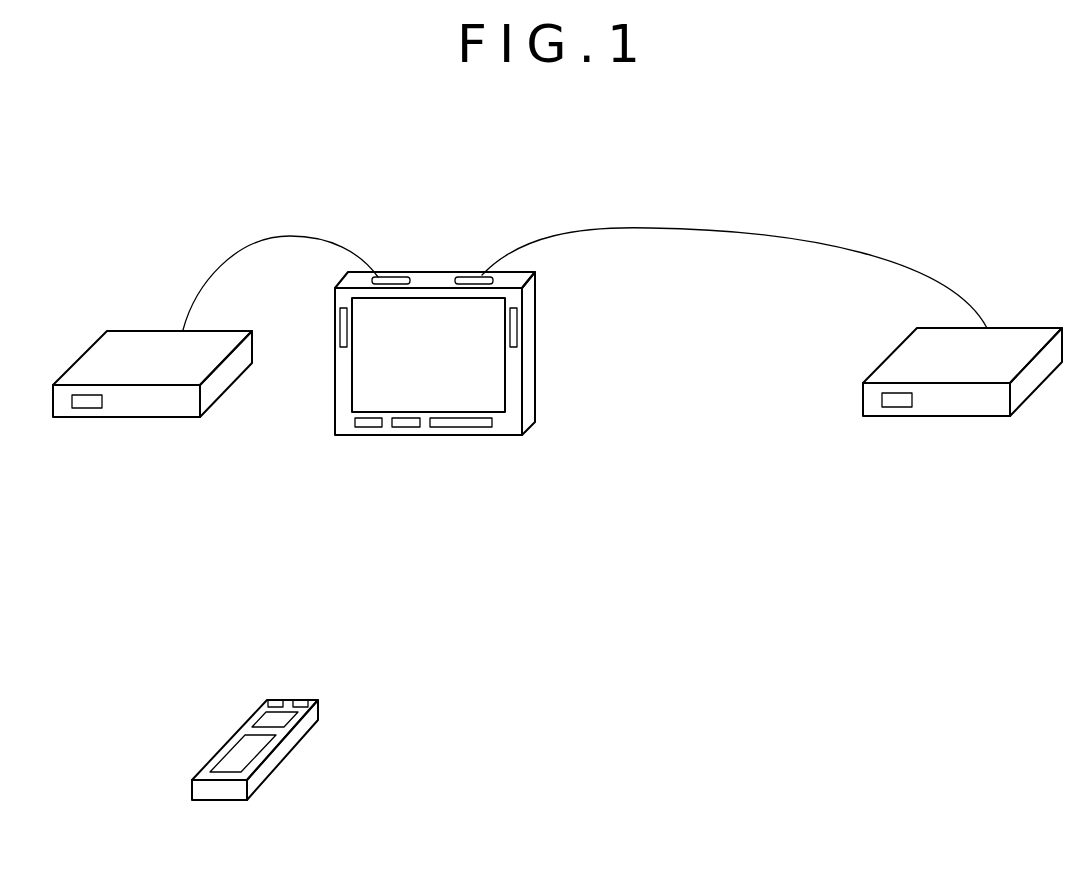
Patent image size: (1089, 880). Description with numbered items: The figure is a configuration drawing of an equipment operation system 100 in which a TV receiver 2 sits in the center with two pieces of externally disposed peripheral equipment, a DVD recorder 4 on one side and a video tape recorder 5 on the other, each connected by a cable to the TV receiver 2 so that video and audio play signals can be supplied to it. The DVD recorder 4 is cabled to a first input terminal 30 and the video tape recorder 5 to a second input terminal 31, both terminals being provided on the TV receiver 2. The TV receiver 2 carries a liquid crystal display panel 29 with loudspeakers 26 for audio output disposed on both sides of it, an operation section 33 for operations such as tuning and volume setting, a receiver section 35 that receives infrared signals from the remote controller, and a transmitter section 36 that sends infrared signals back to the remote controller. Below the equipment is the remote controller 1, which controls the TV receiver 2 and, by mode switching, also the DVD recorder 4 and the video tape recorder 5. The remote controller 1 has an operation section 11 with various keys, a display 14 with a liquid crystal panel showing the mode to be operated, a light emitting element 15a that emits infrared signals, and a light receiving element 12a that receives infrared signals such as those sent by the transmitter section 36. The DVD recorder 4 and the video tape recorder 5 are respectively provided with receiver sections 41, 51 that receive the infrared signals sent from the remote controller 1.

The equipment operation system 100 is at (362, 123).
The remote controller 1 is at (224, 801).
The TV receiver 2 is at (535, 423).
The DVD recorder 4 is at (158, 418).
The video tape recorder 5 is at (968, 417).
The operation section 11 is at (270, 748).
The display 14 is at (290, 722).
The light receiving element 12a is at (277, 700).
The light emitting element 15a is at (303, 699).
The loudspeakers 26 is at (517, 326).
The liquid crystal display panel 29 is at (485, 368).
The first input terminal 30 is at (392, 276).
The second input terminal 31 is at (467, 276).
The operation section 33 is at (458, 428).
The receiver section 35 is at (365, 428).
The transmitter section 36 is at (413, 428).
The receiver section 41 is at (87, 409).
The receiver section 51 is at (897, 408).